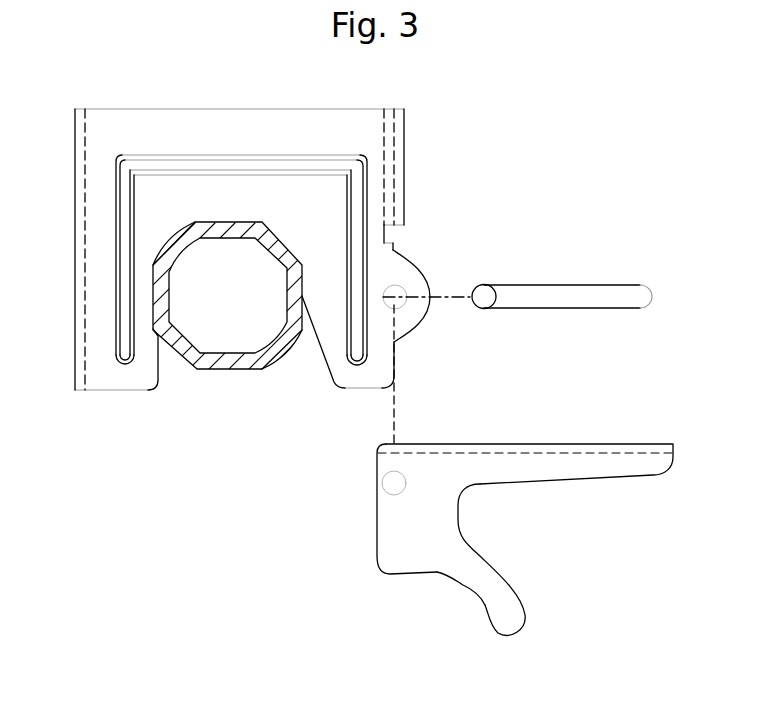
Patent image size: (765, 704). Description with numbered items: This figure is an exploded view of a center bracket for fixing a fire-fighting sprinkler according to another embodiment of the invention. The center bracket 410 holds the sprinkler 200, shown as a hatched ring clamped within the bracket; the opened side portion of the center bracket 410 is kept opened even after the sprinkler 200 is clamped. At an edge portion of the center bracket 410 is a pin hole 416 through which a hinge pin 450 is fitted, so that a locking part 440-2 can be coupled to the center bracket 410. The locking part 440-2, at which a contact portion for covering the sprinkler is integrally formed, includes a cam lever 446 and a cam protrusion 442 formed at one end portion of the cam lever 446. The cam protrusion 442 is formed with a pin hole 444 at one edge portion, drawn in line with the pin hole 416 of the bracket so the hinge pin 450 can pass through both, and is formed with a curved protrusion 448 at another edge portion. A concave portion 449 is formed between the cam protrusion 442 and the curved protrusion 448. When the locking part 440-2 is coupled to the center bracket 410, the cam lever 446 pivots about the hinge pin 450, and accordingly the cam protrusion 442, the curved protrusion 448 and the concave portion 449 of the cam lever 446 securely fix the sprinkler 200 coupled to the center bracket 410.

The sprinkler 200 is at (225, 370).
The center bracket 410 is at (110, 414).
The pin hole 416 is at (396, 295).
The locking part 440-2 is at (527, 511).
The cam protrusion 442 is at (402, 553).
The pin hole 444 is at (394, 483).
The cam lever 446 is at (588, 463).
The curved protrusion 448 is at (513, 621).
The concave portion 449 is at (463, 587).
The hinge pin 450 is at (542, 297).